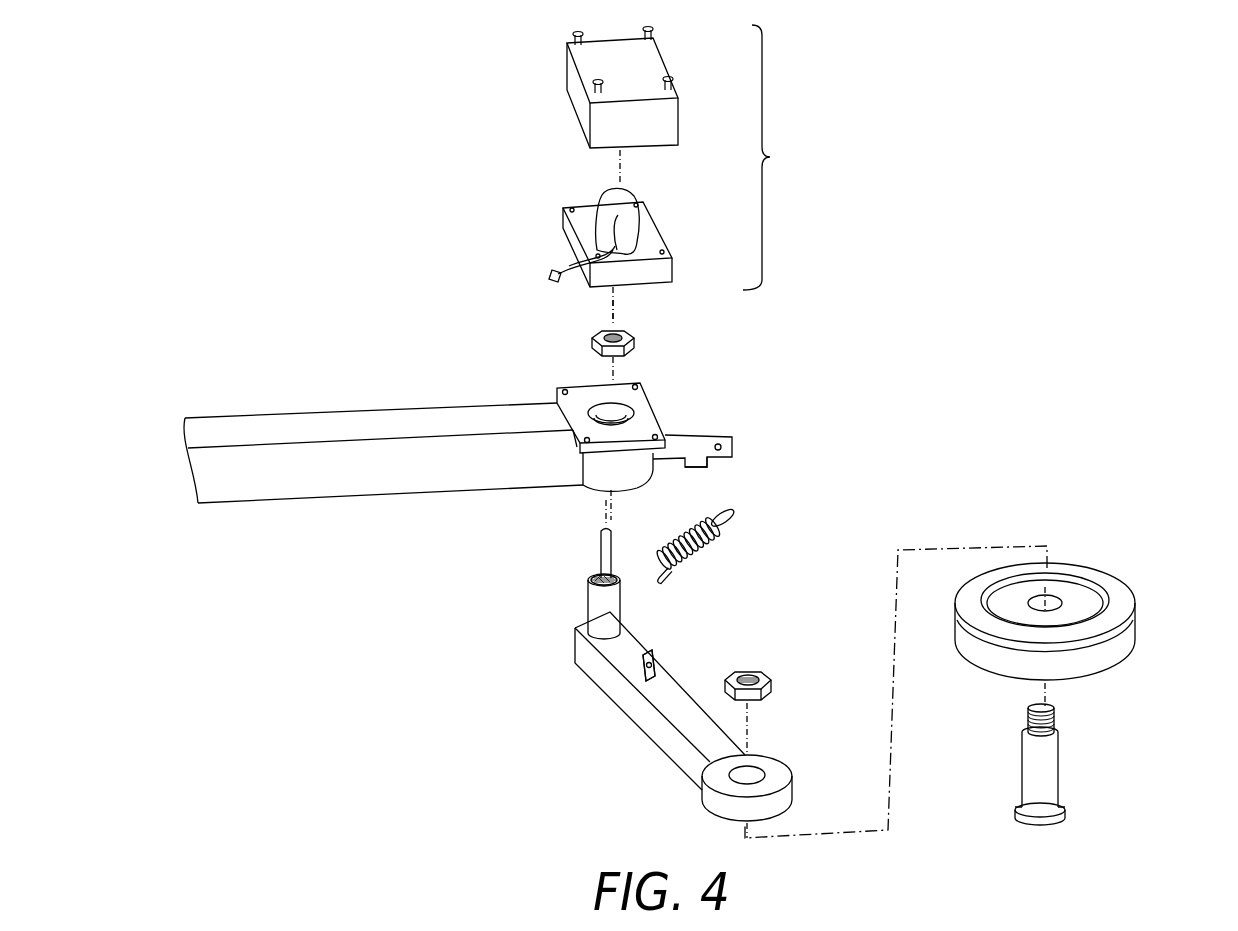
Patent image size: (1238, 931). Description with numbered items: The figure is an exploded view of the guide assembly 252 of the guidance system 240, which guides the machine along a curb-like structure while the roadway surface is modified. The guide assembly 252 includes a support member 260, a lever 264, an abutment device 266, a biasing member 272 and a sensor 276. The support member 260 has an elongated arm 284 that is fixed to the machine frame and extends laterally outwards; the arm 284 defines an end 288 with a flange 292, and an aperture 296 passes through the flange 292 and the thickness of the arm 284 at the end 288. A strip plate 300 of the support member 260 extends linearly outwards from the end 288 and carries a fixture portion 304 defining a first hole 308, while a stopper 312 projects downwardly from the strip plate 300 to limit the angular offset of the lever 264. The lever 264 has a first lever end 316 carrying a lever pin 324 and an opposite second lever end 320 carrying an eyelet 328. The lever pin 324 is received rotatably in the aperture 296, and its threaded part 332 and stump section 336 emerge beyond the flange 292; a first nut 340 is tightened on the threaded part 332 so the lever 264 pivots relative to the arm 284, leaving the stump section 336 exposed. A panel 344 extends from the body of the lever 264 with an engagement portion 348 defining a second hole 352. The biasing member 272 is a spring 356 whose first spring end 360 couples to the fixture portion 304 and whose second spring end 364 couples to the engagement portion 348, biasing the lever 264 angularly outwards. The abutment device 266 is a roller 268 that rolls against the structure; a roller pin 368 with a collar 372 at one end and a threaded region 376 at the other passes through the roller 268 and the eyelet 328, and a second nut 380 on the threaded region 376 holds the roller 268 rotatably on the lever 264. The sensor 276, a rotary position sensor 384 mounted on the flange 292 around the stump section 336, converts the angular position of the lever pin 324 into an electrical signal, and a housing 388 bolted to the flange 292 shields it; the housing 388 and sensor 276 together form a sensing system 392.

The guidance system 240 is at (185, 202).
The guide assembly 252 is at (262, 175).
The support member 260 is at (383, 425).
The arm 284 is at (313, 413).
The lever 264 is at (673, 725).
The abutment device 266 is at (1084, 645).
The roller 268 is at (1112, 672).
The biasing member 272 is at (732, 552).
The sensor 276 is at (557, 246).
The end 288 is at (633, 493).
The flange 292 is at (616, 385).
The aperture 296 is at (598, 407).
The strip plate 300 is at (730, 435).
The fixture portion 304 is at (725, 426).
The first hole 308 is at (718, 433).
The stopper 312 is at (700, 468).
The first lever end 316 is at (621, 701).
The second lever end 320 is at (717, 770).
The lever pin 324 is at (588, 610).
The eyelet 328 is at (733, 763).
The threaded part 332 is at (593, 575).
The stump section 336 is at (600, 540).
The first nut 340 is at (633, 330).
The panel 344 is at (653, 668).
The engagement portion 348 is at (576, 686).
The second hole 352 is at (640, 660).
The spring 356 is at (732, 552).
The first spring end 360 is at (735, 517).
The second spring end 364 is at (657, 583).
The roller pin 368 is at (1046, 769).
The collar 372 is at (1055, 825).
The threaded region 376 is at (1028, 722).
The second nut 380 is at (773, 682).
The rotary position sensor 384 is at (600, 197).
The housing 388 is at (567, 77).
The sensing system 392 is at (628, 172).